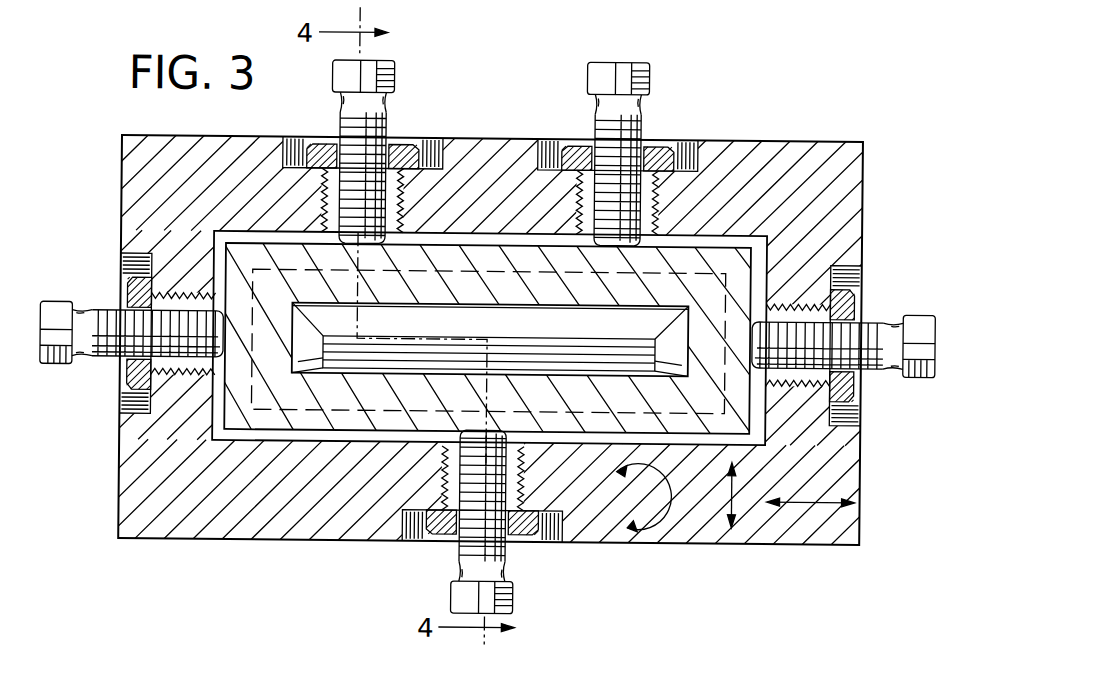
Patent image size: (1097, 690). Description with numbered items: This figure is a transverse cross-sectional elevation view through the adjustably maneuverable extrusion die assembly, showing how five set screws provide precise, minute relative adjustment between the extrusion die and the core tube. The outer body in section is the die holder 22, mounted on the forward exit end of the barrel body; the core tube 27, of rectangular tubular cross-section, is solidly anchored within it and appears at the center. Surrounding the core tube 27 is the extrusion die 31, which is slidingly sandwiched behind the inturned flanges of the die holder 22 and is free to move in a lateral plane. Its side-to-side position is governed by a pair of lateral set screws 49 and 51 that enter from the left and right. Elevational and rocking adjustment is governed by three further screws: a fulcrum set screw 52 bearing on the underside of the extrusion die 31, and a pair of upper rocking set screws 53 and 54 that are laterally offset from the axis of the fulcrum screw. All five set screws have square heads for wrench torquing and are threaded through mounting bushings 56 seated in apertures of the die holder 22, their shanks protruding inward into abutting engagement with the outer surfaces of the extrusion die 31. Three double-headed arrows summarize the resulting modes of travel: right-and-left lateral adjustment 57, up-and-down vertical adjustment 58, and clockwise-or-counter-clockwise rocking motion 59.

The die holder 22 is at (765, 148).
The core holder 27 is at (505, 331).
The extrusion die 31 is at (468, 297).
The lateral set screw 49 is at (55, 306).
The lateral set screw 51 is at (918, 350).
The fulcrum set screw 52 is at (500, 600).
The upper rocking set screw 53 is at (350, 73).
The upper rocking set screw 54 is at (648, 80).
The mounting bushing 56 is at (392, 152).
The right-and-left lateral adjustment 57 is at (808, 495).
The up-and-down vertical adjustment 58 is at (738, 497).
The rocking motion 59 is at (643, 497).